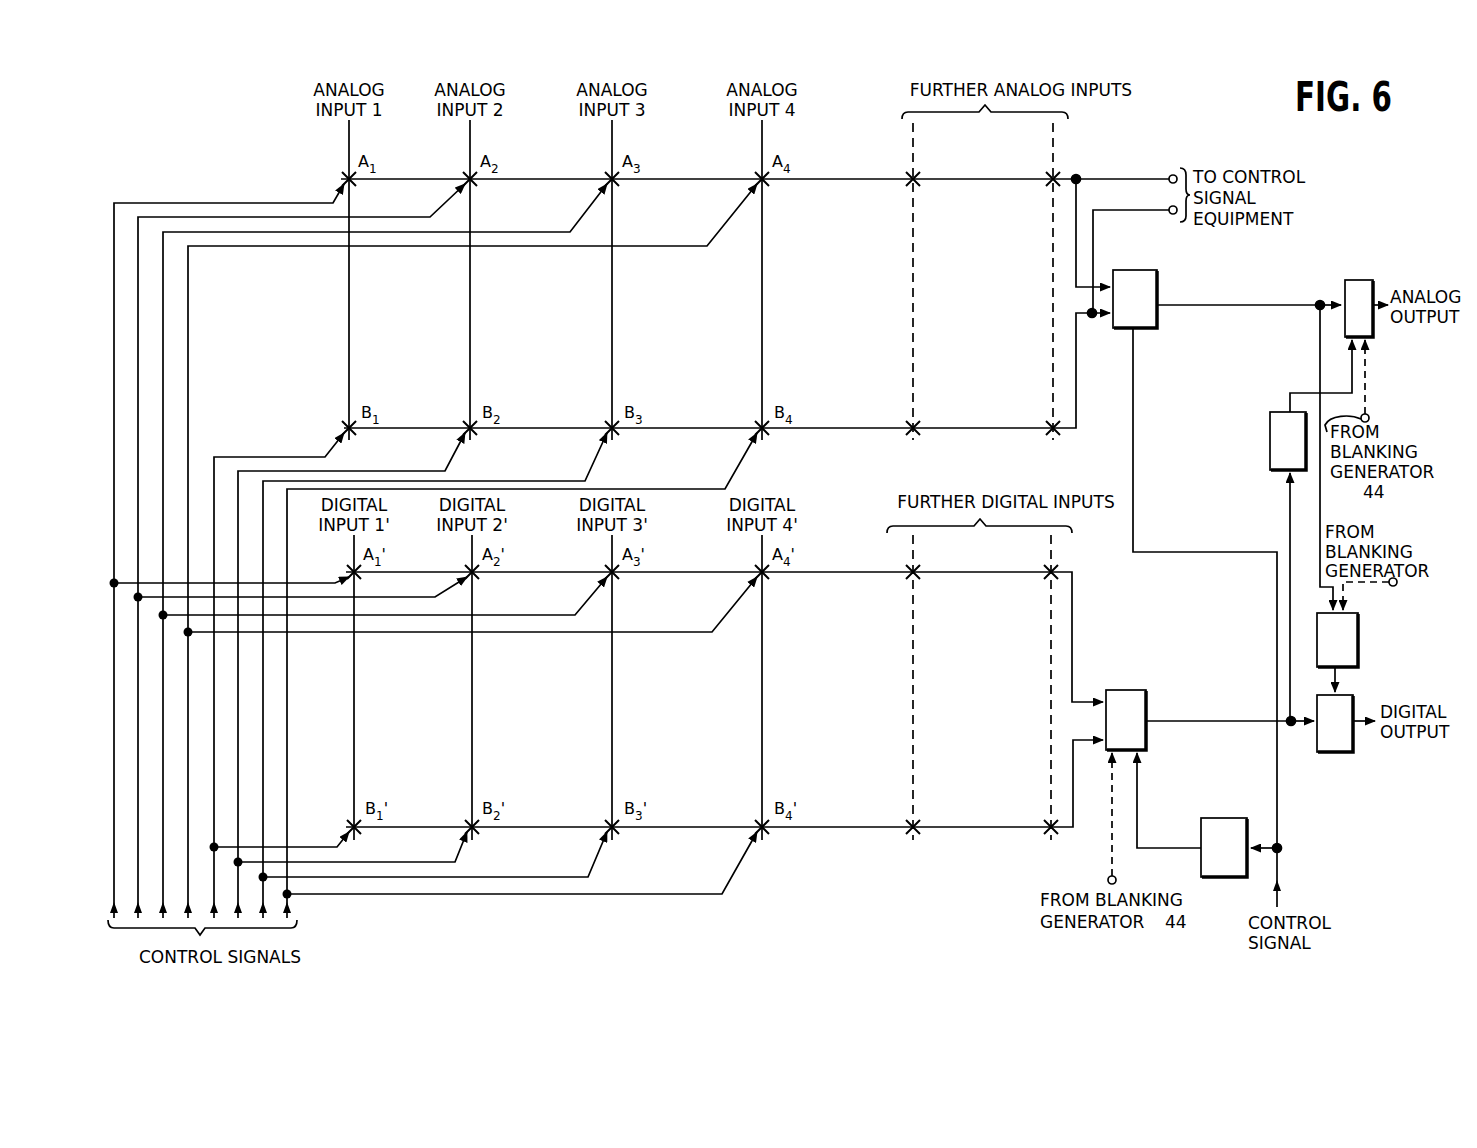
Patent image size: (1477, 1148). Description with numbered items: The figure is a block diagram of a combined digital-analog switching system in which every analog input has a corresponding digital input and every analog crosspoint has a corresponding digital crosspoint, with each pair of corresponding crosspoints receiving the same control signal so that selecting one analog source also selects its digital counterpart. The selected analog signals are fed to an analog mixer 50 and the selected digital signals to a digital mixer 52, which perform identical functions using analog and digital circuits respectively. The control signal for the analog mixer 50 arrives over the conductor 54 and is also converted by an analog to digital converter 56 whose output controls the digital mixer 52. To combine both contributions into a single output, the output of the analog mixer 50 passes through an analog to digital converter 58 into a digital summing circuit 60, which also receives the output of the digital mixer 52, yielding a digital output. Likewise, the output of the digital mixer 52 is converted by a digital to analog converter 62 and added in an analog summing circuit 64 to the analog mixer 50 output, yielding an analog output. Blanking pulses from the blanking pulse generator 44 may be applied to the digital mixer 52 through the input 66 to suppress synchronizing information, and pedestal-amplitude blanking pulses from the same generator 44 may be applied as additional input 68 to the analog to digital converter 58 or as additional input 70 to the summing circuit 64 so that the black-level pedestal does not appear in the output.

The blanking pulse generator 44 is at (1397, 582).
The analog mixer 50 is at (1143, 271).
The digital mixer 52 is at (1125, 690).
The conductor 54 is at (1280, 853).
The analog to digital converter 56 is at (1225, 818).
The analog to digital converter 58 is at (1358, 628).
The digital summing circuit 60 is at (1345, 754).
The digital to analog converter 62 is at (1269, 427).
The analog summing circuit 64 is at (1358, 280).
The input 66 is at (1106, 851).
The additional input 68 is at (1362, 584).
The additional input 70 is at (1369, 378).